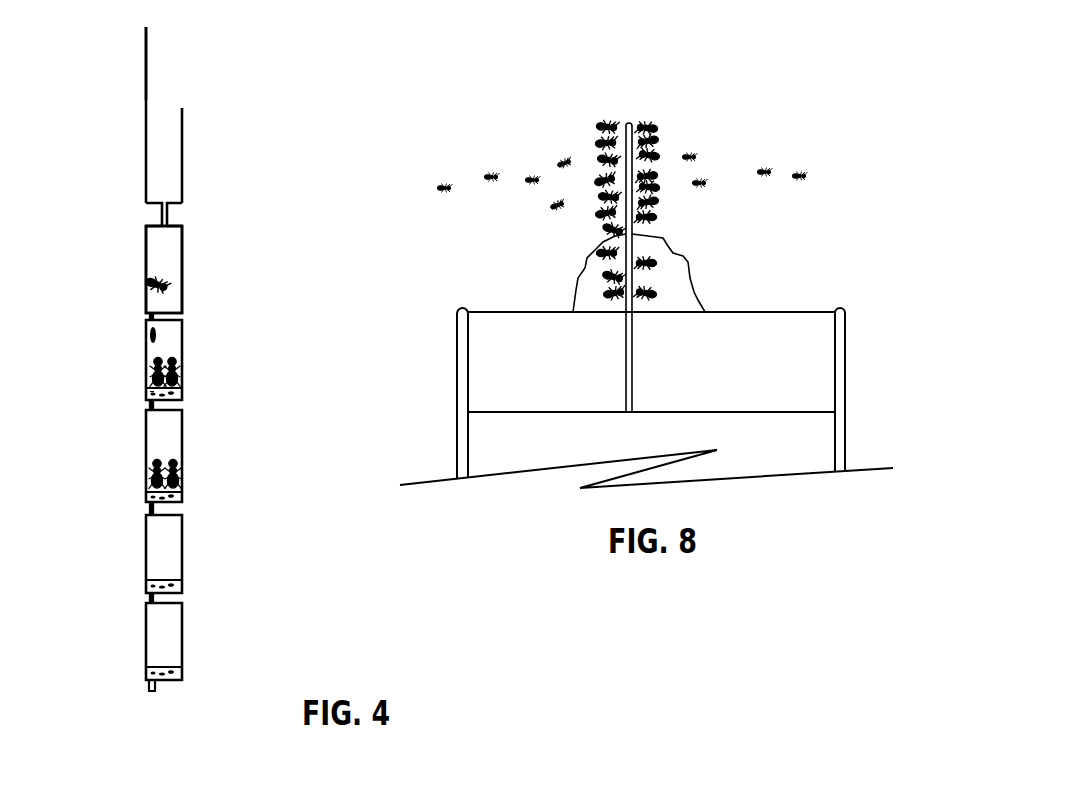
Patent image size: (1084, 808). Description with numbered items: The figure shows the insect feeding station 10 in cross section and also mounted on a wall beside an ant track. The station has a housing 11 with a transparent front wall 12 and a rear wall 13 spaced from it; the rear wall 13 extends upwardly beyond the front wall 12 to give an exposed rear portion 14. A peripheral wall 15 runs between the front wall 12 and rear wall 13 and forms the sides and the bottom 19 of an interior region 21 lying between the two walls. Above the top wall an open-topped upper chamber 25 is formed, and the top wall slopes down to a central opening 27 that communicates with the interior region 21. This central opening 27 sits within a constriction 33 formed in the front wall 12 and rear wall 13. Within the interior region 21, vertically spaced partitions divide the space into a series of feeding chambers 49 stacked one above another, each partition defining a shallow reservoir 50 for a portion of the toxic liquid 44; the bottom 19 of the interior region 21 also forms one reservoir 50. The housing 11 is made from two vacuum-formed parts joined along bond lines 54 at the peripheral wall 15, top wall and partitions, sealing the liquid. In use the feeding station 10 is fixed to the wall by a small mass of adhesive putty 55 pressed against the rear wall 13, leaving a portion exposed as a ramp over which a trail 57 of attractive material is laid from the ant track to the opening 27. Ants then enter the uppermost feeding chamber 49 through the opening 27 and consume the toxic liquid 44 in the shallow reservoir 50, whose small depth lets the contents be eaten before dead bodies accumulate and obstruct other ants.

In FIG. 8, the insect feeding station 10 is at (442, 348).
In FIG. 8, the housing 11 is at (458, 392).
In FIG. 4, the front wall 12 is at (183, 153).
In FIG. 8, the front wall 12 is at (812, 412).
In FIG. 4, the rear wall 13 is at (147, 57).
In FIG. 8, the rear wall 13 is at (525, 307).
In FIG. 4, the exposed rear portion 14 is at (147, 72).
In FIG. 8, the exposed rear portion 14 is at (492, 333).
In FIG. 8, the peripheral wall 15 is at (846, 362).
In FIG. 4, the bottom 19 is at (173, 683).
In FIG. 4, the interior region 21 is at (172, 243).
In FIG. 4, the upper chamber 25 is at (160, 125).
In FIG. 4, the central opening 27 is at (168, 212).
In FIG. 4, the constriction 33 is at (158, 213).
In FIG. 4, the toxic liquid 44 is at (183, 392).
In FIG. 4, the feeding chambers 49 is at (170, 273).
In FIG. 4, the shallow reservoir 50 is at (177, 497).
In FIG. 4, the bond lines 54 is at (147, 320).
In FIG. 8, the adhesive putty 55 is at (672, 267).
In FIG. 8, the trail 57 is at (630, 122).